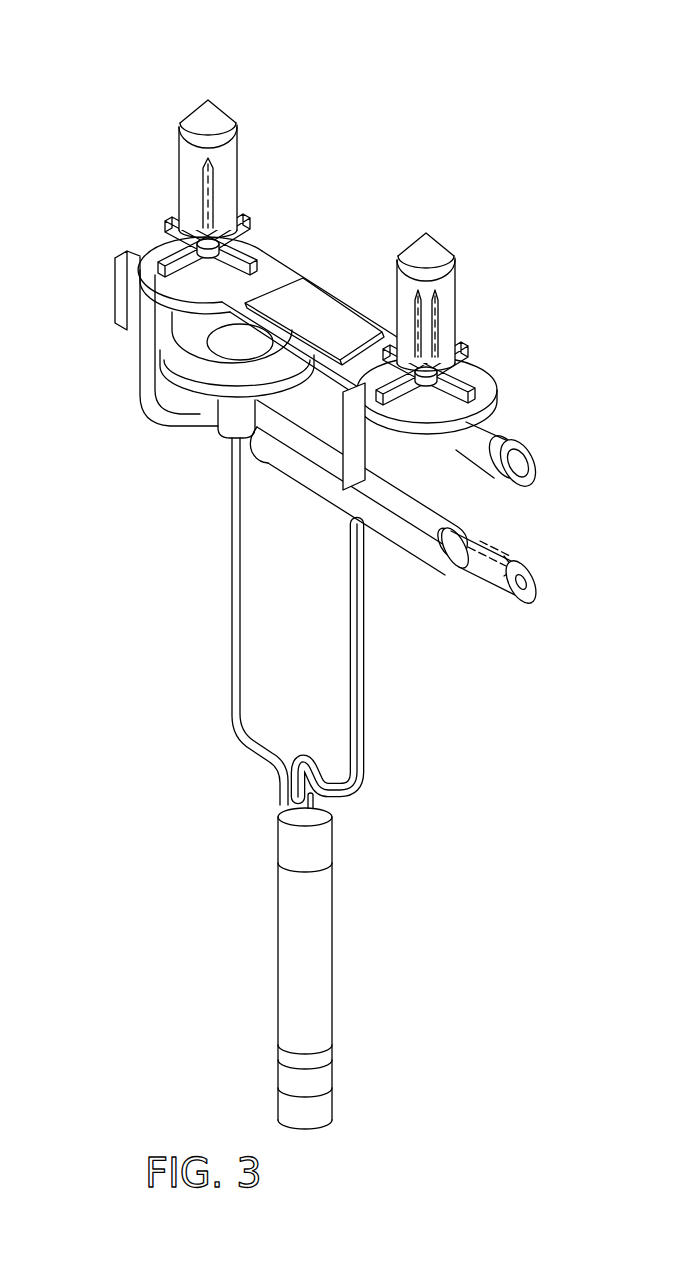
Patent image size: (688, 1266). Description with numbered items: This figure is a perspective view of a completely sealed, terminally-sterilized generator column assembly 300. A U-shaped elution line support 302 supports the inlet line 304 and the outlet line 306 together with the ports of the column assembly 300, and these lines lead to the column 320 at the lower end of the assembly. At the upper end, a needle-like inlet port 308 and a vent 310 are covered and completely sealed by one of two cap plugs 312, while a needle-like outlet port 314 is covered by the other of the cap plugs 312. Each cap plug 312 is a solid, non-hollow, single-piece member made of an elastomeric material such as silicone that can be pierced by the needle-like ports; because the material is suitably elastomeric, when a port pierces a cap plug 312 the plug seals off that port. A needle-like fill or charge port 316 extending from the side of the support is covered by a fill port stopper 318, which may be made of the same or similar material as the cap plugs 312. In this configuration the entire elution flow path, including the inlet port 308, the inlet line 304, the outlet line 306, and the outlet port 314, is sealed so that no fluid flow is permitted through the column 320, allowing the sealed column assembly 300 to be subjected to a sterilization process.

The generator column assembly 300 is at (312, 568).
The U-shaped elution line support 302 is at (243, 450).
The inlet line 304 is at (352, 684).
The outlet line 306 is at (211, 744).
The needle-like inlet port 308 is at (415, 305).
The vent 310 is at (439, 302).
The cap plugs 312 is at (307, 281).
The needle-like outlet port 314 is at (203, 196).
The needle-like fill port 316 is at (510, 612).
The fill port stopper 318 is at (530, 617).
The column 320 is at (277, 955).